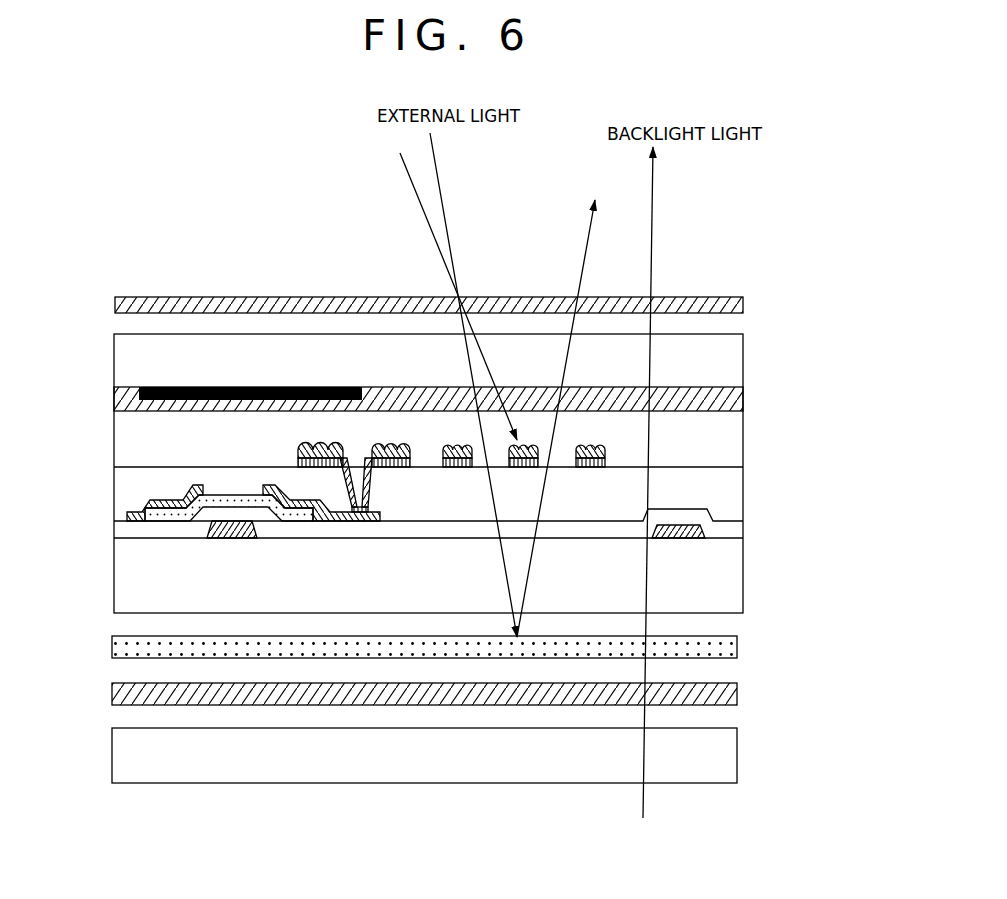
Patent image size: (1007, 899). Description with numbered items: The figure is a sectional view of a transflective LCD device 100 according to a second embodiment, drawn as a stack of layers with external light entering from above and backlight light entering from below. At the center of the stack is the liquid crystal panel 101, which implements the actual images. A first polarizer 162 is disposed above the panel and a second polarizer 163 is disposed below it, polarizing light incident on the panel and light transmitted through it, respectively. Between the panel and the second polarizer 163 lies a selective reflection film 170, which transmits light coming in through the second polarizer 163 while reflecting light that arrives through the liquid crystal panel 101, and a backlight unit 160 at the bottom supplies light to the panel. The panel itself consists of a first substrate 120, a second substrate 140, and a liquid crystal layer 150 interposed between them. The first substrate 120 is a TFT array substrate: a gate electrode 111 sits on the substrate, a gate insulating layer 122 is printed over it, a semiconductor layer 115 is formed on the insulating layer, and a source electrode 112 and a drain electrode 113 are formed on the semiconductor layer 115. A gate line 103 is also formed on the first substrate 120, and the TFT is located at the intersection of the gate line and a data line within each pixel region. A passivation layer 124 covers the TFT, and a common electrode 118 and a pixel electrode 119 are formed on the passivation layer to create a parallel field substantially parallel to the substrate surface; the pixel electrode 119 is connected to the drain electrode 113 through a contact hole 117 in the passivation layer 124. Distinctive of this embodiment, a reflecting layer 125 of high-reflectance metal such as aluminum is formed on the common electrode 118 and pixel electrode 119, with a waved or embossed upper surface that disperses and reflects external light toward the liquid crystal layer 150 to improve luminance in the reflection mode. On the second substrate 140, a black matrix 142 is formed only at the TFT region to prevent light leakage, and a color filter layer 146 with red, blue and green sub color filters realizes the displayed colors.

The transflective LCD device 100 is at (762, 268).
The liquid crystal panel 101 is at (750, 362).
The gate line 103 is at (687, 540).
The gate electrode 111 is at (210, 530).
The source electrode 112 is at (173, 500).
The drain electrode 113 is at (265, 485).
The semiconductor layer 115 is at (137, 508).
The contact hole 117 is at (357, 460).
The common electrode 118 is at (607, 463).
The pixel electrode 119 is at (582, 147).
The first substrate 120 is at (114, 576).
The gate insulating layer 122 is at (655, 530).
The passivation layer 124 is at (655, 488).
The reflecting layer 125 is at (605, 450).
The second substrate 140 is at (114, 360).
The black matrix 142 is at (303, 387).
The color filter layer 146 is at (421, 402).
The liquid crystal layer 150 is at (114, 428).
The backlight unit 160 is at (112, 757).
The first polarizer 162 is at (115, 299).
The second polarizer 163 is at (112, 693).
The selective reflection film 170 is at (112, 647).